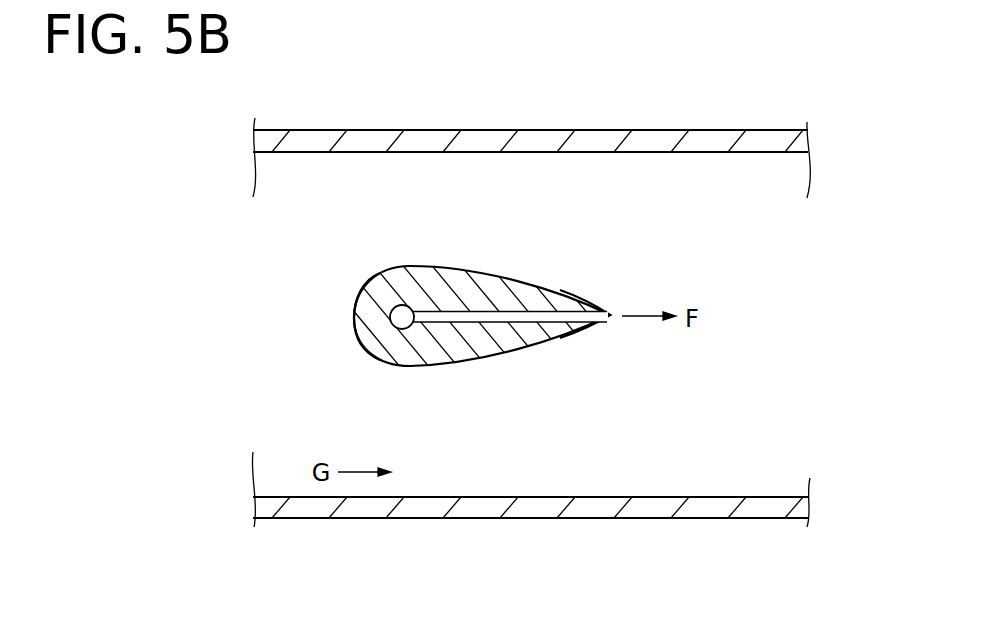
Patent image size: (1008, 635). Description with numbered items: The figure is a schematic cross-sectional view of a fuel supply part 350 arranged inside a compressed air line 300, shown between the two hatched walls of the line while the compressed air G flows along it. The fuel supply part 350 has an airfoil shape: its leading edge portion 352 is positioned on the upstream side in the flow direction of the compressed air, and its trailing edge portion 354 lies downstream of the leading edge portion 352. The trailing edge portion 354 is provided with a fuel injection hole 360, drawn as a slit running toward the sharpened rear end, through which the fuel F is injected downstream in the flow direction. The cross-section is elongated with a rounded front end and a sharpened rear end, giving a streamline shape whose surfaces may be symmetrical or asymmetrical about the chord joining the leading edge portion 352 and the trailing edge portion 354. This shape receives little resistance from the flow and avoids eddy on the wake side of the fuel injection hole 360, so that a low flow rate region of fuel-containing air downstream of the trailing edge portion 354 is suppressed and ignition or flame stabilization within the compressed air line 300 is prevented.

The compressed air line 300 is at (503, 518).
The fuel supply part 350 is at (487, 312).
The leading edge portion 352 is at (357, 335).
The trailing edge portion 354 is at (604, 308).
The fuel injection hole 360 is at (613, 320).